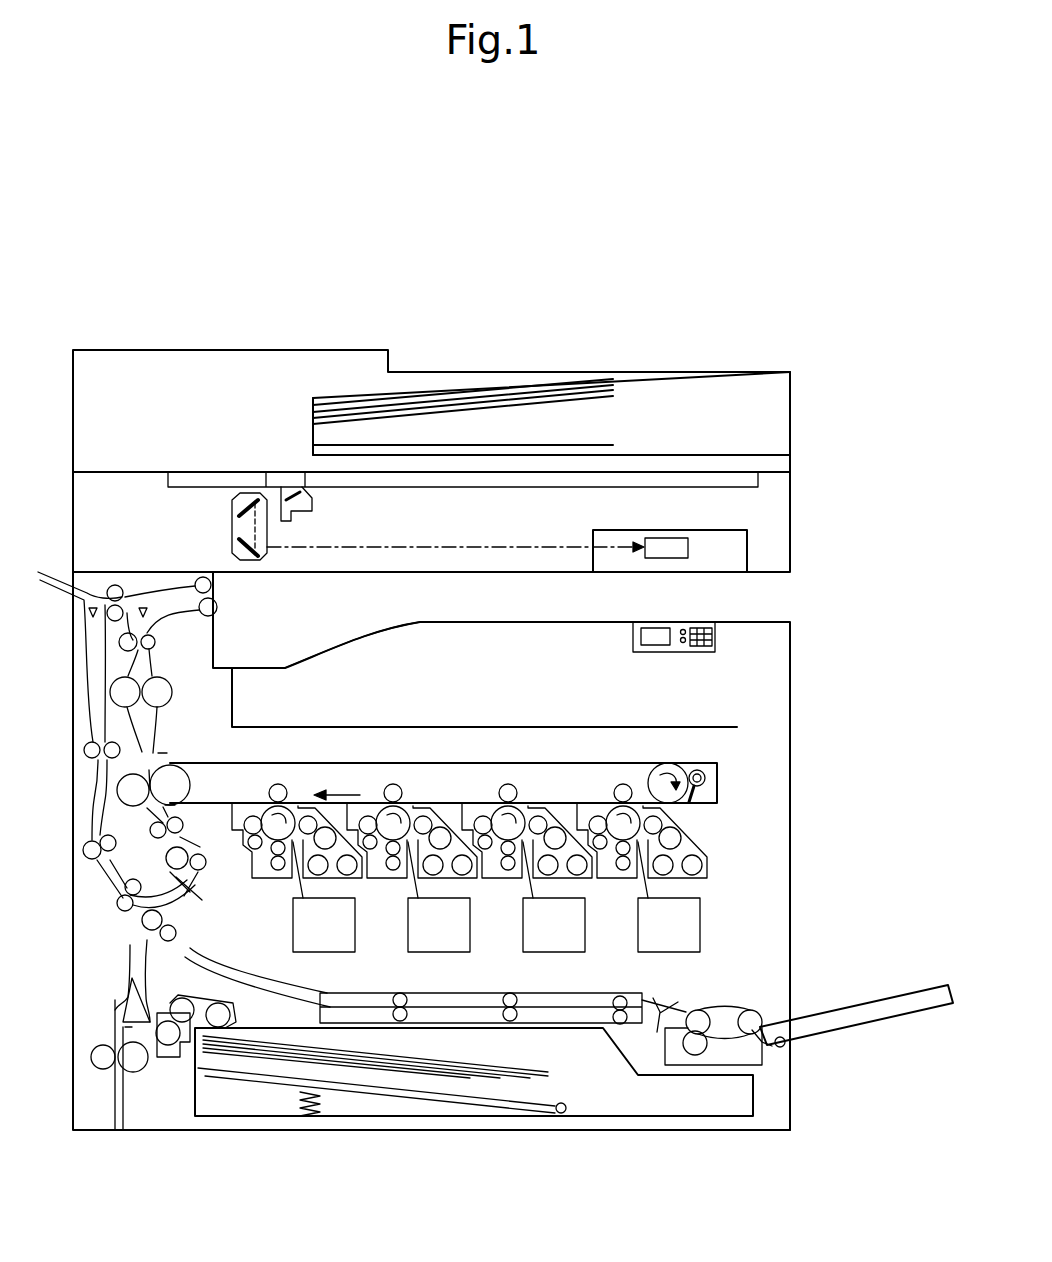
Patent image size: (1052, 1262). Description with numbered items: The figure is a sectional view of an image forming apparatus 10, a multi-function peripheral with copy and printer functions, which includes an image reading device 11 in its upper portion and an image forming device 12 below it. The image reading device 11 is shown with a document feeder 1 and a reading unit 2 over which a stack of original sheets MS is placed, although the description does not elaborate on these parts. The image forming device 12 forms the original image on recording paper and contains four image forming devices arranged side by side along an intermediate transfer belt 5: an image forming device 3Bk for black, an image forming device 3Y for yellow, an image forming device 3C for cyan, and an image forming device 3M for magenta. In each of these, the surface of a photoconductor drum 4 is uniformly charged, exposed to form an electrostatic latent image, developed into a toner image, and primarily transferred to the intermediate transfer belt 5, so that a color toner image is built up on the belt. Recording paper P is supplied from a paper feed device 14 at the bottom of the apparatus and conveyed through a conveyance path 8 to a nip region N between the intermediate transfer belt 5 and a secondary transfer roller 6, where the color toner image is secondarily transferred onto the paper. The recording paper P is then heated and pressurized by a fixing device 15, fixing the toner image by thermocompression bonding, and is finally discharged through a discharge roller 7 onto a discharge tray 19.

The image forming apparatus 10 is at (372, 239).
The image reading device 11 is at (822, 445).
The image forming device 12 is at (760, 852).
The paper feed device 14 is at (716, 1162).
The document feeder 1 is at (648, 388).
The image reading unit 2 is at (650, 455).
The original sheets MS is at (442, 443).
The discharge roller 7 is at (208, 570).
The discharge tray 19 is at (337, 652).
The fixing device 15 is at (170, 687).
The nip region N is at (150, 748).
The secondary transfer roller 6 is at (167, 757).
The intermediate transfer belt 5 is at (638, 762).
The image forming device for black 3Bk is at (281, 776).
The image forming device for yellow 3Y is at (383, 776).
The image forming device for cyan 3C is at (483, 778).
The image forming device for magenta 3M is at (605, 778).
The photoconductor drum 4 is at (397, 836).
The conveyance path 8 is at (130, 947).
The recording paper P is at (540, 1055).